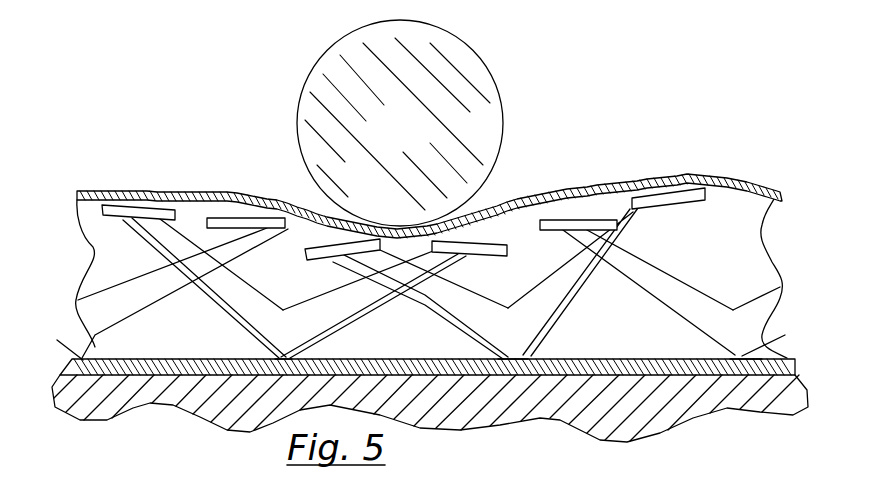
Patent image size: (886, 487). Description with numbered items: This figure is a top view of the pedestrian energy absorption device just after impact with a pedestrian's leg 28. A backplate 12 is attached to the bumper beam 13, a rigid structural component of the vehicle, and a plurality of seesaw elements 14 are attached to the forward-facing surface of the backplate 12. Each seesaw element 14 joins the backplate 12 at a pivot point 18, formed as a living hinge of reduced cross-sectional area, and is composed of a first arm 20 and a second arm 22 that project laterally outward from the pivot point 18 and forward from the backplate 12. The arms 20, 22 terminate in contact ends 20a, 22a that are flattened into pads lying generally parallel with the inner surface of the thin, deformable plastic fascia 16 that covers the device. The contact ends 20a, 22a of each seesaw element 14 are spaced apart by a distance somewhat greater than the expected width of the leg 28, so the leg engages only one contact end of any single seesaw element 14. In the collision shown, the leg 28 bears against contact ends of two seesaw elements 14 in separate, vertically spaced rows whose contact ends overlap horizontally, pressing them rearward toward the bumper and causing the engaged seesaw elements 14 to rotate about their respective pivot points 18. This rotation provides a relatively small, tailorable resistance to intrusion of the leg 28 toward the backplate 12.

The backplate 12 is at (85, 360).
The bumper beam 13 is at (783, 393).
The seesaw element 14 is at (120, 266).
The fascia 16 is at (715, 180).
The pivot point 18 is at (283, 352).
The first arm 20 is at (342, 307).
The contact end 20a is at (220, 218).
The second arm 22 is at (232, 292).
The contact end 22a is at (107, 205).
The pedestrian's leg 28 is at (414, 137).